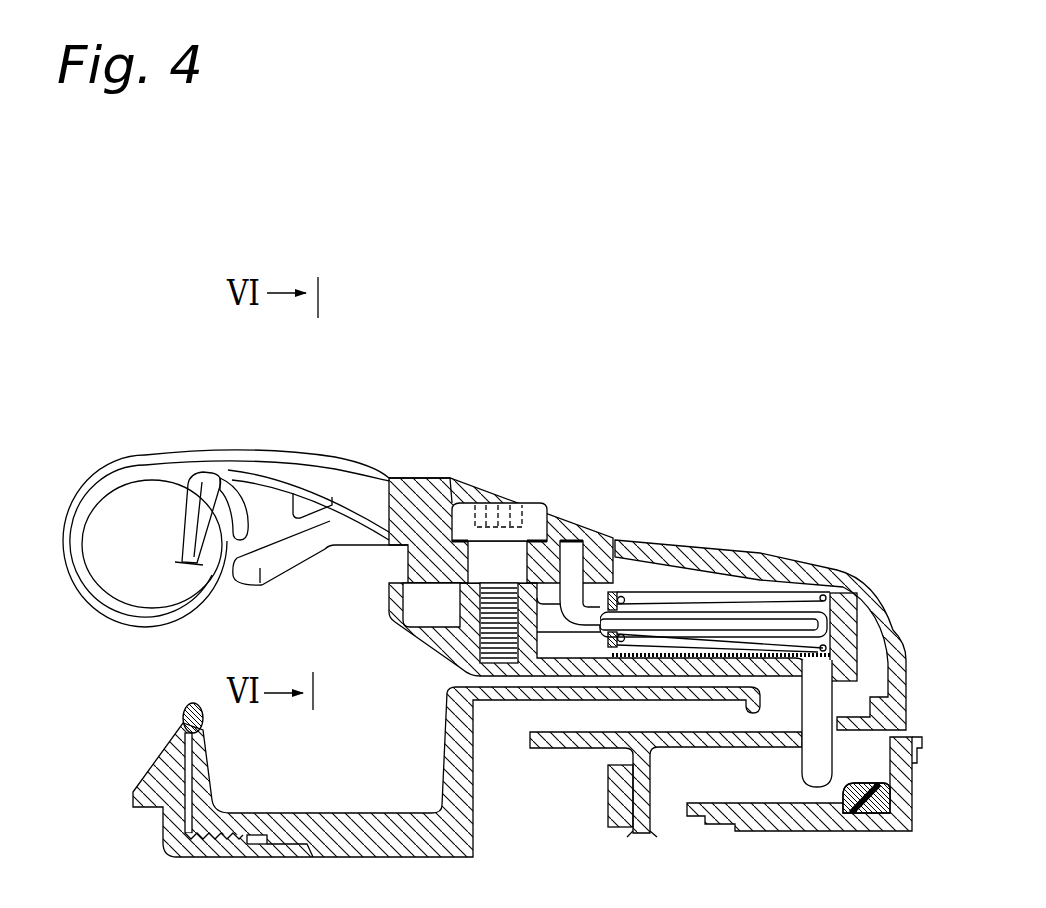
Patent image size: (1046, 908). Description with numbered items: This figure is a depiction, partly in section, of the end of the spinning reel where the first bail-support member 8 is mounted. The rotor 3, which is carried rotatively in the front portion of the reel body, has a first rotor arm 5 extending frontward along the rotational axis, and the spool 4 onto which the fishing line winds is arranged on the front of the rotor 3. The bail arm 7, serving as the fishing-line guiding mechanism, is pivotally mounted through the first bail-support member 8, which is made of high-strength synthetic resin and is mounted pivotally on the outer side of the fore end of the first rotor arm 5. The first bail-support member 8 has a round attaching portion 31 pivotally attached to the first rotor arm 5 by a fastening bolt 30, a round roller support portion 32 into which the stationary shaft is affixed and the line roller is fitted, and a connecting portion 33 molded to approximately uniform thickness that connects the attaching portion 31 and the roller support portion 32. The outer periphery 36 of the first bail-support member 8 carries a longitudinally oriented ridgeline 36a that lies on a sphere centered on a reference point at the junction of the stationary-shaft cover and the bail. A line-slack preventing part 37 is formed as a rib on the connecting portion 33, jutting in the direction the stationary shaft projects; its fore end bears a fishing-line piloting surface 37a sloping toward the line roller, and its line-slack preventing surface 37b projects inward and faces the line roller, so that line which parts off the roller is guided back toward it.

The rotor 3 is at (565, 757).
The spool 4 is at (338, 810).
The first rotor arm 5 is at (697, 663).
The bail arm 7 is at (152, 653).
The first bail-support member 8 is at (343, 478).
The fastening bolt 30 is at (528, 506).
The attaching portion 31 is at (590, 537).
The roller support portion 32 is at (107, 467).
The connecting portion 33 is at (257, 463).
The outer periphery 36 is at (318, 457).
The ridgeline 36a is at (413, 460).
The line-slack preventing part 37 is at (318, 552).
The fishing-line piloting surface 37a is at (278, 568).
The line-slack preventing surface 37b is at (226, 588).